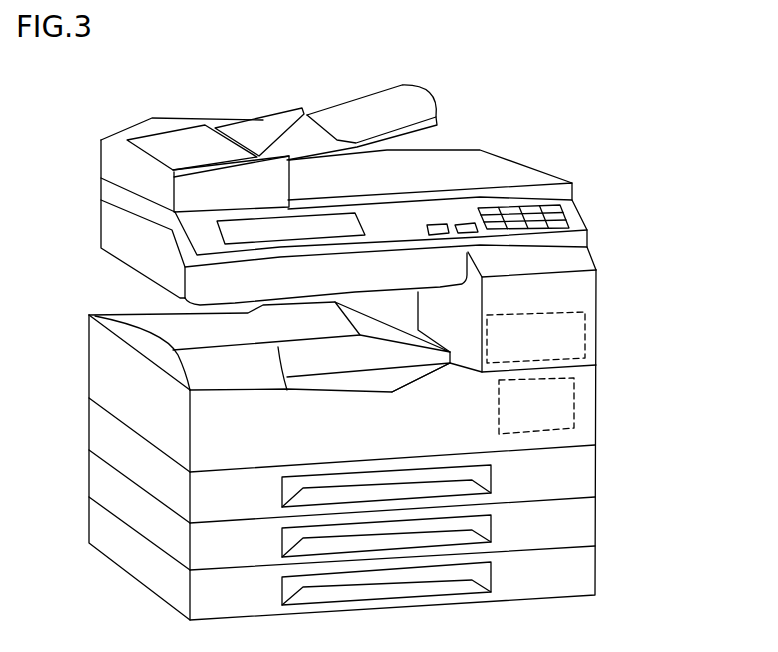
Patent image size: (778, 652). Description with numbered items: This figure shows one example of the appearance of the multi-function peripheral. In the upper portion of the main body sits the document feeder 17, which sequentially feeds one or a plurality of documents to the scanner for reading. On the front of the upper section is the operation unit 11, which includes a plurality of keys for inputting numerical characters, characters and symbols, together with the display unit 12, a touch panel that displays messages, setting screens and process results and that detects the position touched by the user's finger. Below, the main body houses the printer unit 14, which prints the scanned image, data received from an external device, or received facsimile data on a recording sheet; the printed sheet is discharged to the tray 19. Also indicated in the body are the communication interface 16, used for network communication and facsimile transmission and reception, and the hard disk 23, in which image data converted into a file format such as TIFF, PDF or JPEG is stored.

The operation unit 11 is at (458, 222).
The display unit 12 is at (237, 232).
The printer unit 14 is at (600, 362).
The communication interface 16 is at (575, 400).
The document feeder 17 is at (262, 152).
The tray 19 is at (398, 320).
The hard disk 23 is at (586, 325).